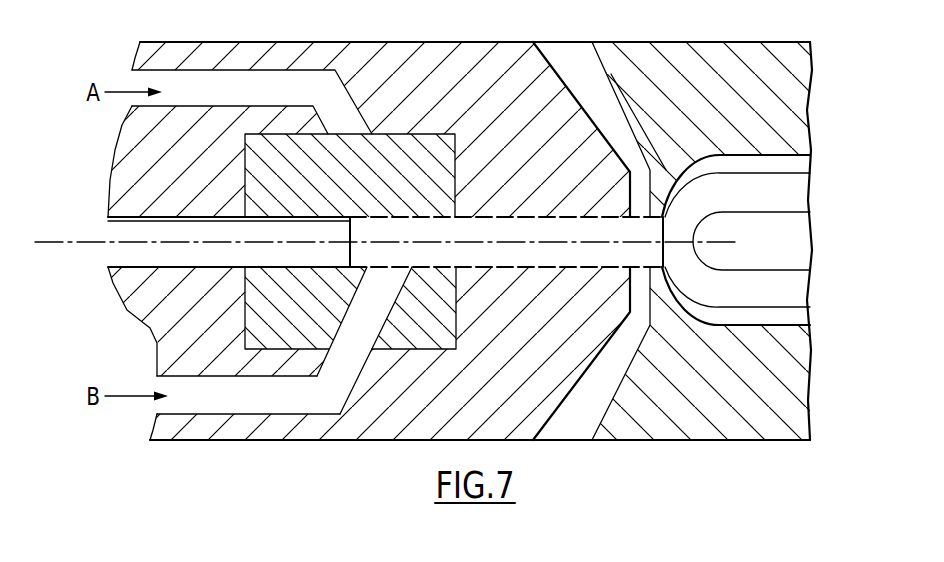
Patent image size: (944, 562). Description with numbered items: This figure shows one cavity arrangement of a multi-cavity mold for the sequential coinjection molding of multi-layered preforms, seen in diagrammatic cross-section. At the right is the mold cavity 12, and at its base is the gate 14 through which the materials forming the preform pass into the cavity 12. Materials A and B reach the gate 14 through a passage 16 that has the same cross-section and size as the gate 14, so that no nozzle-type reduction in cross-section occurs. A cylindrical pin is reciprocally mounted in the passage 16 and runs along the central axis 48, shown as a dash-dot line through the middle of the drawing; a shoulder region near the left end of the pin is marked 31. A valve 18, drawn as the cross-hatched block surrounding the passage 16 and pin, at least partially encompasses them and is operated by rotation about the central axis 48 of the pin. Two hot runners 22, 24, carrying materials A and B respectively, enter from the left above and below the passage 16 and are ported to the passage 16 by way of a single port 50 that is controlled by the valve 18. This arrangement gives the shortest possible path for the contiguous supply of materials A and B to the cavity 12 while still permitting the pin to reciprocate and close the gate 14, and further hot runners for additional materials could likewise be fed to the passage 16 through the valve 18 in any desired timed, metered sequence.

The cavity 12 is at (755, 240).
The gate 14 is at (738, 223).
The passage 16 is at (385, 220).
The valve 18 is at (369, 239).
The hot runner 22 is at (252, 102).
The hot runner 24 is at (248, 395).
The pin shoulder 31 is at (208, 200).
The central axis 48 is at (377, 262).
The single port 50 is at (377, 340).